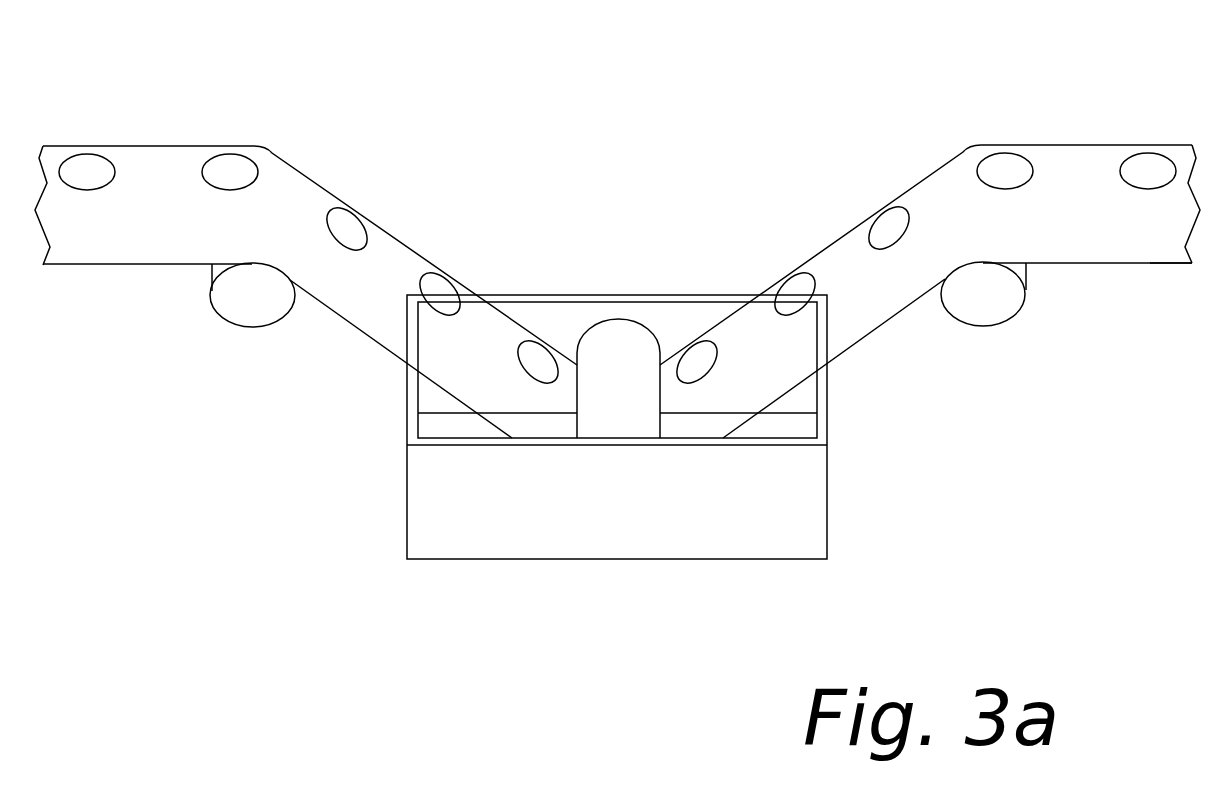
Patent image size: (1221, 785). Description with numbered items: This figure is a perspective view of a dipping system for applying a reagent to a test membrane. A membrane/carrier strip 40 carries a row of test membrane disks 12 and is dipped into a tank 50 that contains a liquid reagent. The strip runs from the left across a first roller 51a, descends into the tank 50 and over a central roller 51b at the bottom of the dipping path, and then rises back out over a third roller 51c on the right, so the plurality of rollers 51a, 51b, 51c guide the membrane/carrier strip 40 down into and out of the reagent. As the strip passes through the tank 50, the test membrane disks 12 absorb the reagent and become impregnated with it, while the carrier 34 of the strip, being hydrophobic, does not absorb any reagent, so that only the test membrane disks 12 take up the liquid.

The membrane/carrier strip 40 is at (74, 110).
The test membrane disks 12 is at (1149, 160).
The carrier 34 is at (1168, 250).
The tank 50 is at (803, 547).
The roller 51a is at (243, 312).
The roller 51b is at (615, 330).
The roller 51c is at (985, 312).